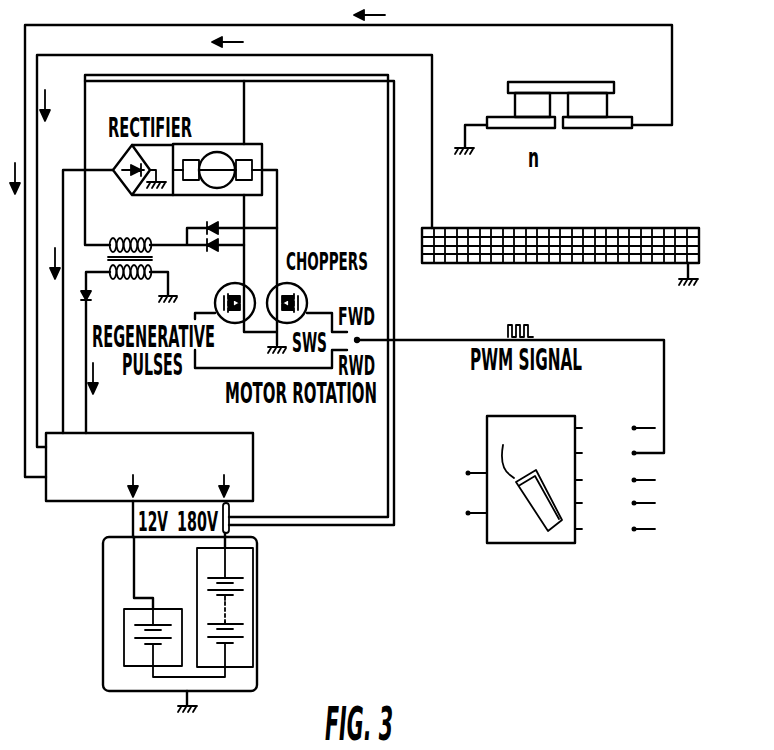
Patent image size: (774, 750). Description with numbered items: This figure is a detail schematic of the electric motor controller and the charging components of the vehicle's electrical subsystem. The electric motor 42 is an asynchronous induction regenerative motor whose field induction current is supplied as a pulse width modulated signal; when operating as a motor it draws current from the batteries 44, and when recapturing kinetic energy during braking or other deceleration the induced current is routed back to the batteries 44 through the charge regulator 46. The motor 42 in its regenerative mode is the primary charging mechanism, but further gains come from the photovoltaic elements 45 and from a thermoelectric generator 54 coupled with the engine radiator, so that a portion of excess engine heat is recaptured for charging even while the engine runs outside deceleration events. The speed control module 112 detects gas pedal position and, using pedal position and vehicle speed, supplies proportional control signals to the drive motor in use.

The electric motor 42 is at (233, 145).
The batteries 44 is at (257, 588).
The photovoltaic elements 45 is at (480, 228).
The charge regulator 46 is at (240, 460).
The thermoelectric generator 54 is at (542, 94).
The speed control module 112 is at (487, 527).